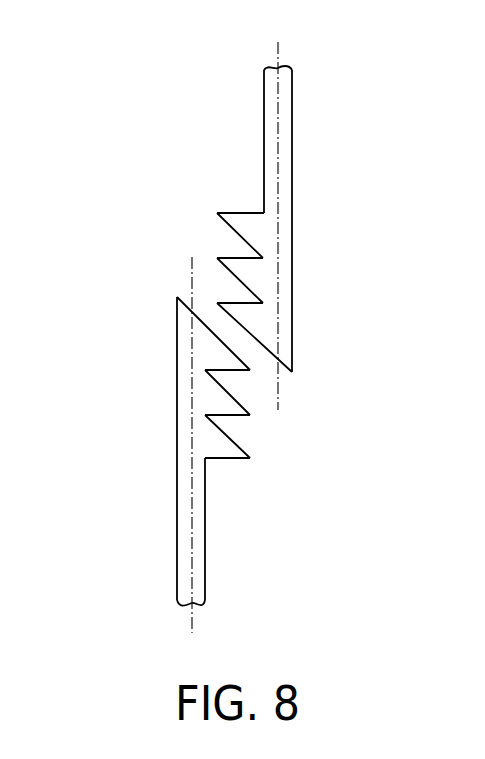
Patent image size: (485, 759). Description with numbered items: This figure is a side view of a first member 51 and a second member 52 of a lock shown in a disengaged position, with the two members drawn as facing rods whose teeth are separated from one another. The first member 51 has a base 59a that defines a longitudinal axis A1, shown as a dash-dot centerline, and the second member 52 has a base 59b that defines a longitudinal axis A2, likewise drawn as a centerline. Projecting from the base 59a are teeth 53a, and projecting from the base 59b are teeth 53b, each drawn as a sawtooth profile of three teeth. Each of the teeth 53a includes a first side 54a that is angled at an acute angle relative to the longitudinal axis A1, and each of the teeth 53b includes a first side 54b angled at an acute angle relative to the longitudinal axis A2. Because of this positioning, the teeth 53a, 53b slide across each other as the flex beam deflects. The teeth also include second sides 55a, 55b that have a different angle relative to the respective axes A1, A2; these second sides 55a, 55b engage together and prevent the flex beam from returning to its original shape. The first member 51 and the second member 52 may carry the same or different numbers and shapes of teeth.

The first member 51 is at (287, 216).
The second member 52 is at (203, 443).
The teeth 53a is at (260, 245).
The first sides 54a is at (240, 233).
The second sides 55a is at (233, 212).
The teeth 53b is at (214, 395).
The first sides 54b is at (212, 326).
The second sides 55b is at (242, 372).
The base 59a is at (283, 91).
The base 59b is at (197, 568).
The longitudinal axis A1 is at (277, 44).
The longitudinal axis A2 is at (192, 280).